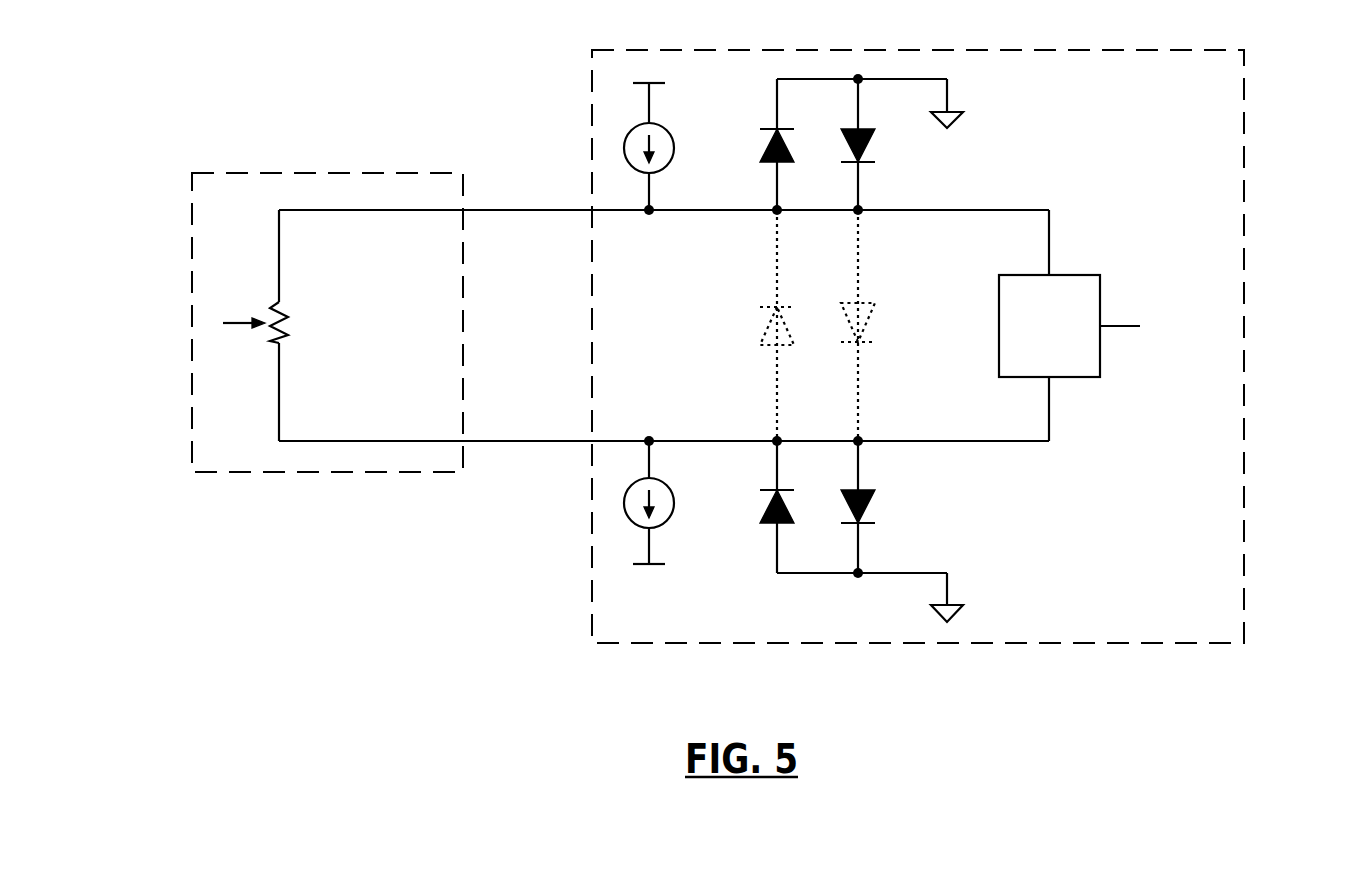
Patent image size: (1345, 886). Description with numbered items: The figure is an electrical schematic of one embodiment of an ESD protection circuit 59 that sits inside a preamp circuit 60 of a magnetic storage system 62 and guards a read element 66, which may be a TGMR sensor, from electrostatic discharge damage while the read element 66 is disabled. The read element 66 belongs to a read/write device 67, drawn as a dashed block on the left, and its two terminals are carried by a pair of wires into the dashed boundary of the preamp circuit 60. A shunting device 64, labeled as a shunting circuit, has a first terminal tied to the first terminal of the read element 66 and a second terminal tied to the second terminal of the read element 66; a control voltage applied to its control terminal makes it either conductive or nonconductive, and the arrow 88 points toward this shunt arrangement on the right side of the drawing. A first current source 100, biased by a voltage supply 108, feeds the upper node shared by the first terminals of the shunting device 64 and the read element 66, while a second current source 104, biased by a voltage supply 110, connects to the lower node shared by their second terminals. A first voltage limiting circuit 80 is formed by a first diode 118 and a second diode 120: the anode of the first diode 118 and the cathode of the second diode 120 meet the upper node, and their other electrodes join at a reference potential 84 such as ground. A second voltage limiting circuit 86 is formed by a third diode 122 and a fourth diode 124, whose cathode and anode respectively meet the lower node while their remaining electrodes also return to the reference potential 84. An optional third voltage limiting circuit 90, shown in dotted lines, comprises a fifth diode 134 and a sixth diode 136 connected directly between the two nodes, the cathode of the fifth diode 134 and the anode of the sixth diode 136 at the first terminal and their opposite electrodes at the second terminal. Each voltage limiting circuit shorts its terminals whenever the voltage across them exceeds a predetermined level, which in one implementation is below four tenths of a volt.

The ESD protection circuit 59 is at (1106, 139).
The preamp circuit 60 is at (1246, 90).
The magnetic storage system 62 is at (336, 106).
The shunting device 64 is at (1082, 275).
The read element 66 is at (290, 333).
The read/write device 67 is at (190, 212).
The first voltage limiting circuit 80 is at (894, 136).
The reference potential 84 is at (950, 129).
The second voltage limiting circuit 86 is at (876, 507).
The shunt arrangement 88 is at (1218, 297).
The third voltage limiting circuit 90 is at (843, 325).
The first current source 100 is at (668, 132).
The second current source 104 is at (668, 490).
The voltage supply 108 is at (655, 83).
The voltage supply 110 is at (640, 566).
The first diode 118 is at (766, 162).
The second diode 120 is at (868, 163).
The third diode 122 is at (766, 524).
The fourth diode 124 is at (876, 490).
The fifth diode 134 is at (766, 345).
The sixth diode 136 is at (870, 303).